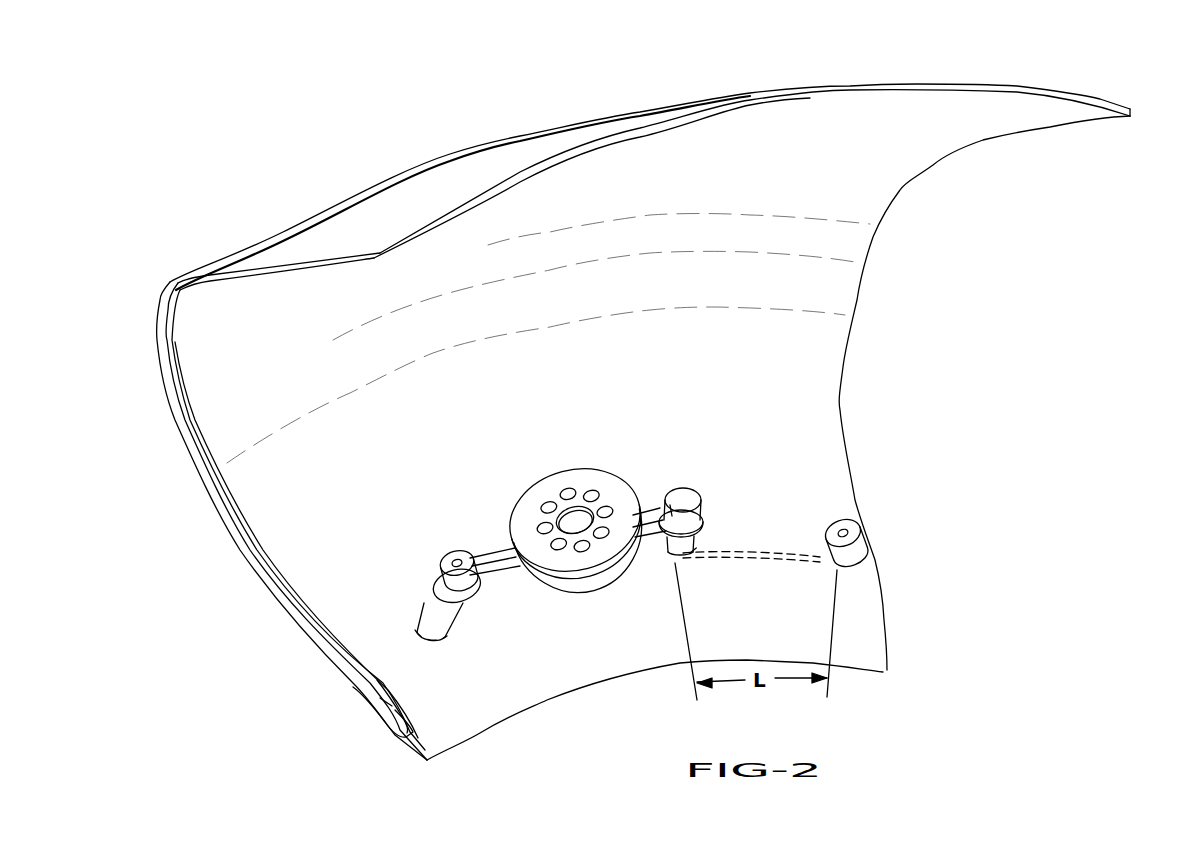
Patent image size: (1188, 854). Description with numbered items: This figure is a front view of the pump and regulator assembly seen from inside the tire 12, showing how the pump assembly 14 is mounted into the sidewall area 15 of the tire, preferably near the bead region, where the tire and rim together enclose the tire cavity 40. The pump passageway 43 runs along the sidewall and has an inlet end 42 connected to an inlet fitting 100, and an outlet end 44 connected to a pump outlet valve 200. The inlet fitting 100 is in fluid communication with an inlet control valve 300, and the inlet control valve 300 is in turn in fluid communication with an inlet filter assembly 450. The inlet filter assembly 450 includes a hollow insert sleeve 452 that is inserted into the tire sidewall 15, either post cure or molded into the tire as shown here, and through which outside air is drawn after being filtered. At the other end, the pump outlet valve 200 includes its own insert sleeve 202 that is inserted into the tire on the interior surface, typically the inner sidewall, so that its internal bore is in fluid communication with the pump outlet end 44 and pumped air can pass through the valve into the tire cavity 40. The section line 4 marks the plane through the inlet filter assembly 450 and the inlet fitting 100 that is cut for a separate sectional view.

The tire 12 is at (1057, 93).
The sidewall area 15 is at (832, 333).
The tire cavity 40 is at (806, 230).
The inlet control valve 300 is at (515, 466).
The inlet fitting 100 is at (672, 479).
The inlet filter assembly 450 is at (436, 548).
The insert sleeve 452 is at (443, 617).
The pump outlet valve 200 is at (857, 527).
The section line 4- 4 is at (427, 583).
The pump passageway 43 is at (778, 553).
The outlet end 44 is at (825, 560).
The inlet end 42 is at (687, 557).
The pump assembly 14 is at (770, 565).
The insert sleeve 202 is at (665, 553).